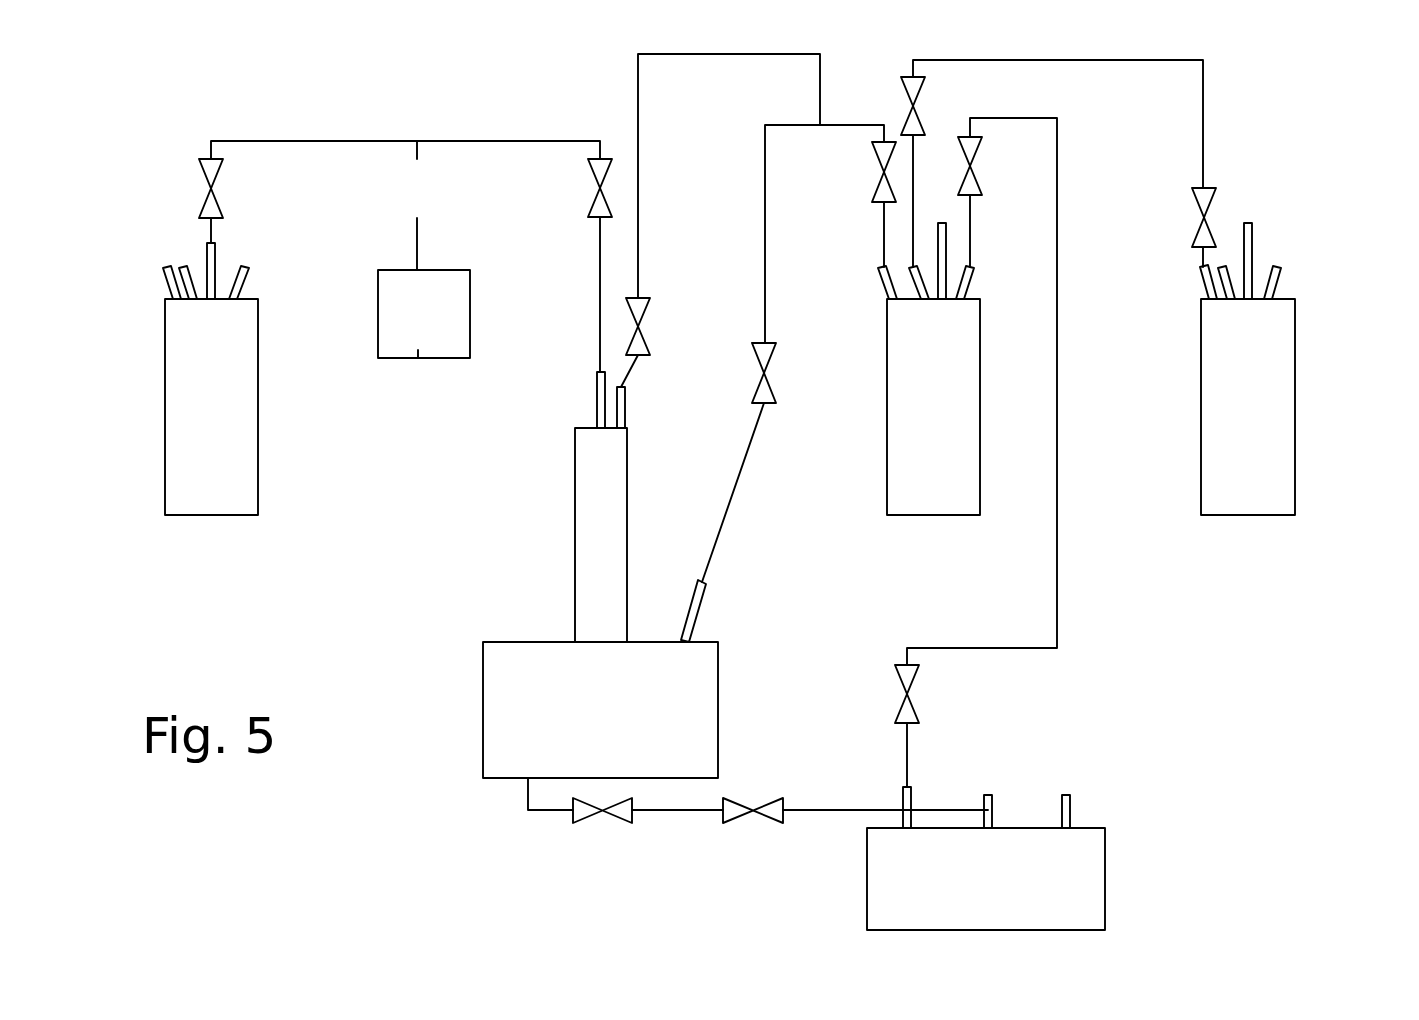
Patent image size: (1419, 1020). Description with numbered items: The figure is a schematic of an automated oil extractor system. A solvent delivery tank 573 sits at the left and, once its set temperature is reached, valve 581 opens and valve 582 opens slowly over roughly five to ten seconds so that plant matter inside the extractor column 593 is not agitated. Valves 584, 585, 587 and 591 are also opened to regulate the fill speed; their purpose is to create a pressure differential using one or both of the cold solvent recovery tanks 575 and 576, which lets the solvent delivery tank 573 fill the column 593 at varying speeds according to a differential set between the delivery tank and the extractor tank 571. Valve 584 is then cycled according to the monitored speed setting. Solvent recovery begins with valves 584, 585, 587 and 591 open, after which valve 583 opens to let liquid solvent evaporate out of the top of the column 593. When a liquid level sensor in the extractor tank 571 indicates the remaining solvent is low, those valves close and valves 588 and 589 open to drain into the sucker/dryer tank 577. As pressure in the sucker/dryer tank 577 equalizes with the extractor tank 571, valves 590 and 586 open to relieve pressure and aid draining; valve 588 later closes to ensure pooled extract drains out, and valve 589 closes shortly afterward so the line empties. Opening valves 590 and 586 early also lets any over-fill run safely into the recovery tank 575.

The extractor tank 571 is at (497, 727).
The solvent delivery tank 573 is at (247, 457).
The cold solvent recovery tank 575 is at (897, 481).
The cold solvent recovery tank 576 is at (1283, 362).
The sucker/dryer tank 577 is at (1100, 845).
The valve 581 is at (203, 175).
The valve 582 is at (595, 200).
The valve 583 is at (650, 307).
The valve 584 is at (753, 393).
The valve 585 is at (877, 185).
The valve 586 is at (983, 183).
The valve 587 is at (900, 95).
The valve 588 is at (587, 813).
The valve 589 is at (743, 807).
The valve 590 is at (910, 677).
The valve 591 is at (1213, 195).
The extractor column 593 is at (592, 538).